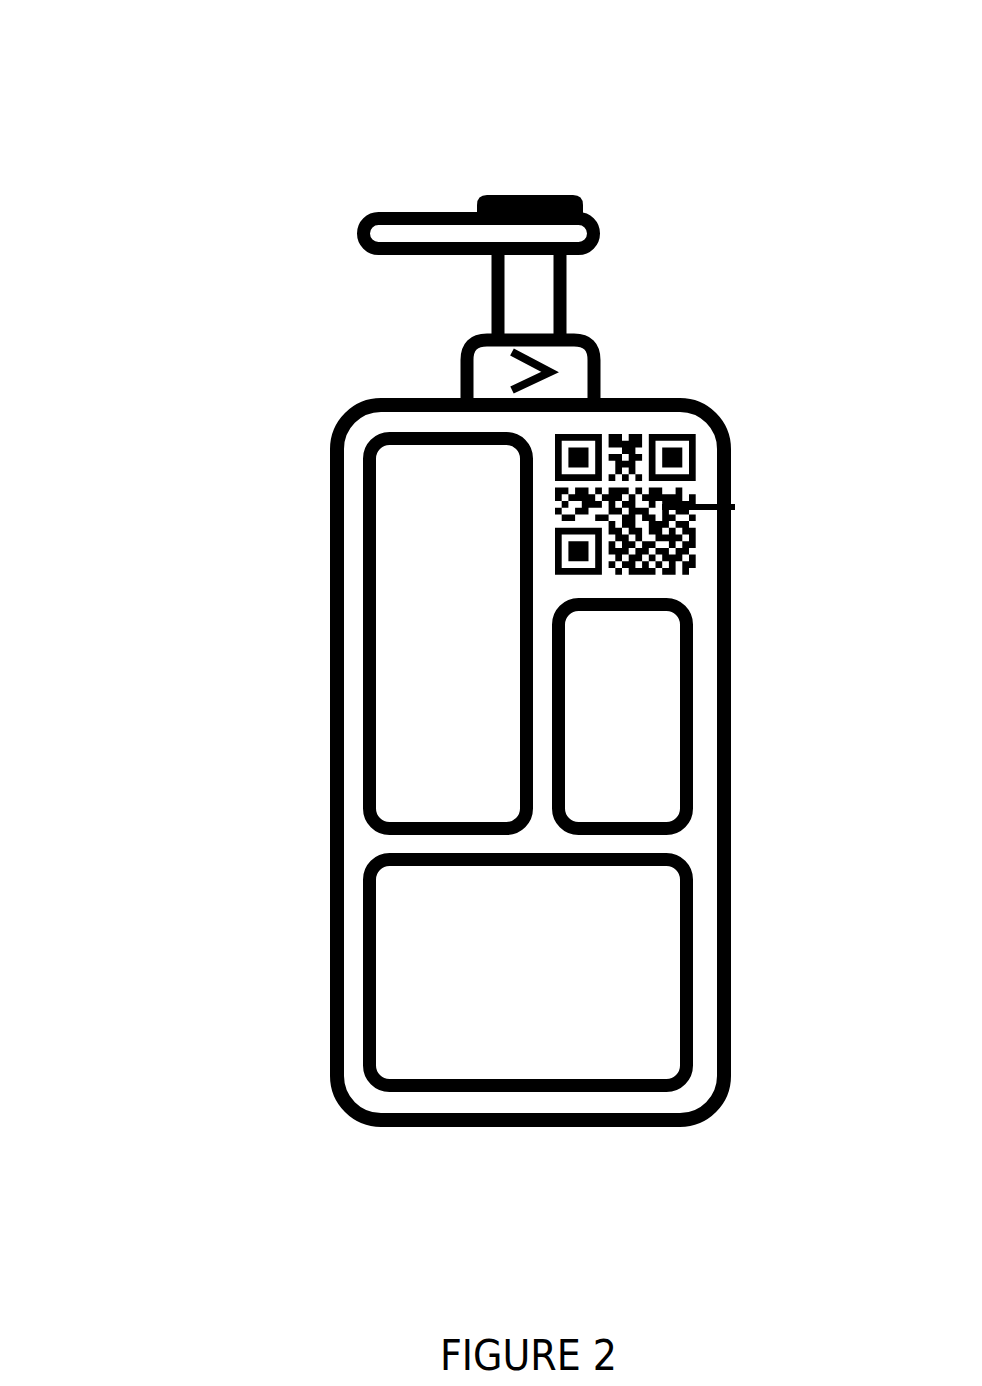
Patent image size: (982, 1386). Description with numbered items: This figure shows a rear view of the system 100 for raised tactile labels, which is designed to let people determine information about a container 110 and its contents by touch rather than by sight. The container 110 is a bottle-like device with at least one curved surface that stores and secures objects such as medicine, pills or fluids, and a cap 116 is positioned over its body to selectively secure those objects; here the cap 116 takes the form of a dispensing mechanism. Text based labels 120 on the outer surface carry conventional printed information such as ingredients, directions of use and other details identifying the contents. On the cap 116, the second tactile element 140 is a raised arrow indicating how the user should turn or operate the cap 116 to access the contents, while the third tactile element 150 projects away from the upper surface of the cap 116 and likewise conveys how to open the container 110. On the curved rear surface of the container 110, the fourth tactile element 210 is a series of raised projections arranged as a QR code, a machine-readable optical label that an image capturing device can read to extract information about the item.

The system for raised tactile labels 100 is at (134, 76).
The container 110 is at (329, 683).
The cap 116 is at (493, 297).
The text based labels 120 is at (418, 990).
The second tactile element 140 is at (553, 367).
The third tactile element 150 is at (527, 207).
The fourth tactile element 210 is at (639, 482).